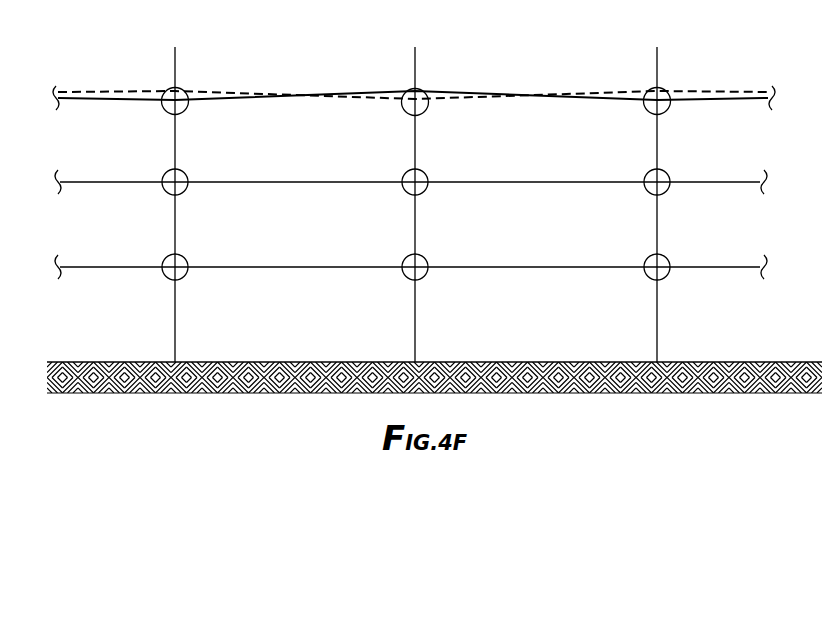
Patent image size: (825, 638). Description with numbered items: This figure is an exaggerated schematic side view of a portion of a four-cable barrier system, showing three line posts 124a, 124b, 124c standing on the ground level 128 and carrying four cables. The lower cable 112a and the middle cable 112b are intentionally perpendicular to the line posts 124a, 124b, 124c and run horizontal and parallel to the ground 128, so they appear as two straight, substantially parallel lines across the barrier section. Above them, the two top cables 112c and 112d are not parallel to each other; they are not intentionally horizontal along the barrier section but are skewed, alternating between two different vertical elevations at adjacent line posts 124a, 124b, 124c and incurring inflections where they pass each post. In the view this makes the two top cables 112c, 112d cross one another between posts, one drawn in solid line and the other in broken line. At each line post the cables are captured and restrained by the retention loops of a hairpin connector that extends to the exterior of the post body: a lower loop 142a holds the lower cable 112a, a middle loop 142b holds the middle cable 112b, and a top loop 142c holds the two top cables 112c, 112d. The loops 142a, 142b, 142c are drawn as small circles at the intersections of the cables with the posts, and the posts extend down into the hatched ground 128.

The lower cable 112a is at (140, 262).
The middle cable 112b is at (122, 180).
The top cable 112c is at (628, 92).
The top cable 112d is at (370, 92).
The line post 124a is at (178, 209).
The line post 124b is at (418, 213).
The line post 124c is at (660, 215).
The ground level 128 is at (457, 361).
The lower loop 142a is at (168, 280).
The middle loop 142b is at (187, 170).
The top loop 142c is at (165, 108).